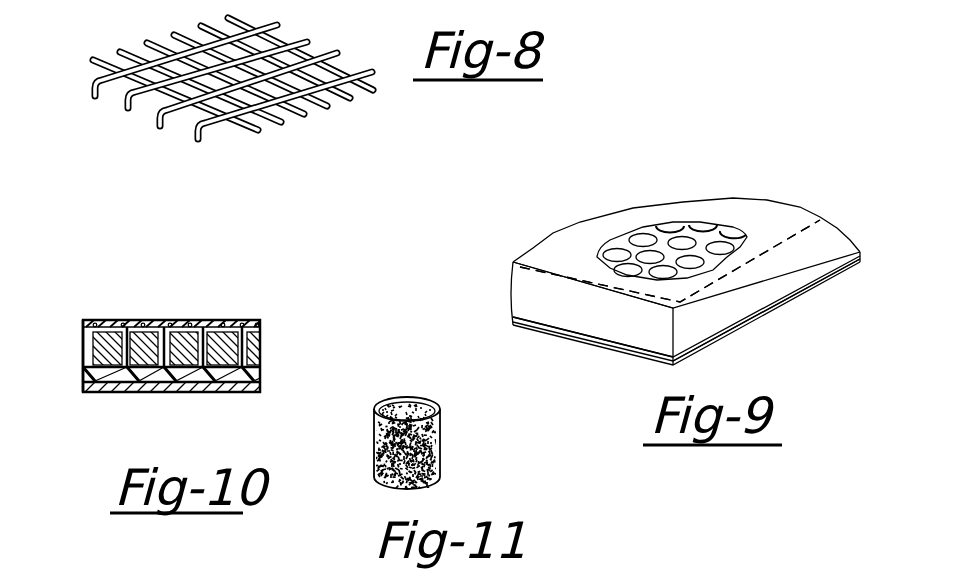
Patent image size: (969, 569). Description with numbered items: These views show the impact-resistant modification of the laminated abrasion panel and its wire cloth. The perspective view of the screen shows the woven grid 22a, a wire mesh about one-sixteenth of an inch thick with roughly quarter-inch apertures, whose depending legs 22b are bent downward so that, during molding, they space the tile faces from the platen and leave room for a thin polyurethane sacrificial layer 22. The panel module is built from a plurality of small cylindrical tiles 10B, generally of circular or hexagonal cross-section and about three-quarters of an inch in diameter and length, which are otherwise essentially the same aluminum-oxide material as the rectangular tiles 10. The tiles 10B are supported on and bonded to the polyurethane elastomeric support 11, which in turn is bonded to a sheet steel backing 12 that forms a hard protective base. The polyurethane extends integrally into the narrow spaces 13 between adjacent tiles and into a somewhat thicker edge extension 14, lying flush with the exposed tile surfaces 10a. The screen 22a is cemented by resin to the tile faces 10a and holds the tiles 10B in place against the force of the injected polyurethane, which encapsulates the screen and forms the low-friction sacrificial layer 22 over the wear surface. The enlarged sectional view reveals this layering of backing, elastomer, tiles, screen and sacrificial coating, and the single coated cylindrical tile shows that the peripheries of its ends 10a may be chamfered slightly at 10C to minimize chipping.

In FIG. 9, the abrasion resistant tiles 10 is at (648, 255).
In FIG. 10, the exposed tile surface 10a is at (171, 324).
In FIG. 9, the cylindrical tiles 10B is at (648, 226).
In FIG. 10, the cylindrical tiles 10B is at (108, 379).
In FIG. 11, the cylindrical tiles 10B is at (447, 452).
In FIG. 11, the chamfer 10C is at (448, 399).
In FIG. 9, the polyurethane elastomeric cushioning support 11 is at (593, 361).
In FIG. 10, the polyurethane elastomeric cushioning support 11 is at (189, 402).
In FIG. 9, the sheet steel backing 12 is at (766, 310).
In FIG. 10, the sheet steel backing 12 is at (172, 410).
In FIG. 9, the spaces between tiles 13 is at (672, 210).
In FIG. 10, the spaces between tiles 13 is at (184, 315).
In FIG. 9, the integral edge extension 14 is at (593, 332).
In FIG. 10, the integral edge extension 14 is at (158, 347).
In FIG. 9, the sacrificial layer 22 is at (670, 292).
In FIG. 10, the sacrificial layer 22 is at (192, 295).
In FIG. 8, the grid or wire mesh screen 22a is at (233, 100).
In FIG. 10, the grid or wire mesh screen 22a is at (216, 307).
In FIG. 8, the depending legs 22b is at (233, 110).